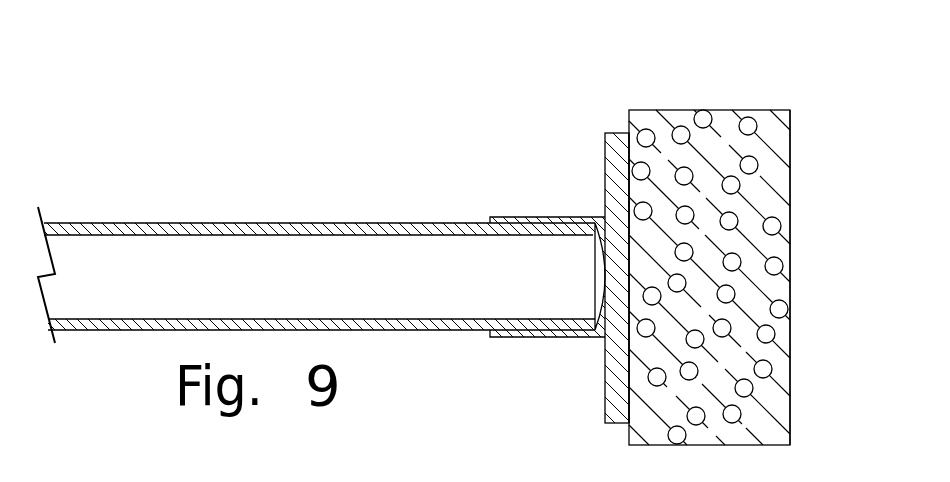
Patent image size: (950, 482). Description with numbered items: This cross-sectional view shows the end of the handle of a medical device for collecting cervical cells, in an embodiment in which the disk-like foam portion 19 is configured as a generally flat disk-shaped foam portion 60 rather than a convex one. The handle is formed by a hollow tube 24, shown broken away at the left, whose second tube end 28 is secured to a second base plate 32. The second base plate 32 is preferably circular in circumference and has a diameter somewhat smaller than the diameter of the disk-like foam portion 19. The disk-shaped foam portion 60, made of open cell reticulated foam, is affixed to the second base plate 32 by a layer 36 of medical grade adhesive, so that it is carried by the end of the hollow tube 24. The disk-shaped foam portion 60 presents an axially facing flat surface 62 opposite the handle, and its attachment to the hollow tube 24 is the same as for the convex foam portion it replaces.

The hollow tube 24 is at (332, 223).
The second tube end 28 is at (603, 215).
The second base plate 32 is at (622, 133).
The disk-shaped foam portion 60 is at (755, 236).
The axially facing flat surface 62 is at (790, 300).
The disk-like foam portion 19 is at (790, 241).
The layer of medical grade adhesive 36 is at (628, 392).